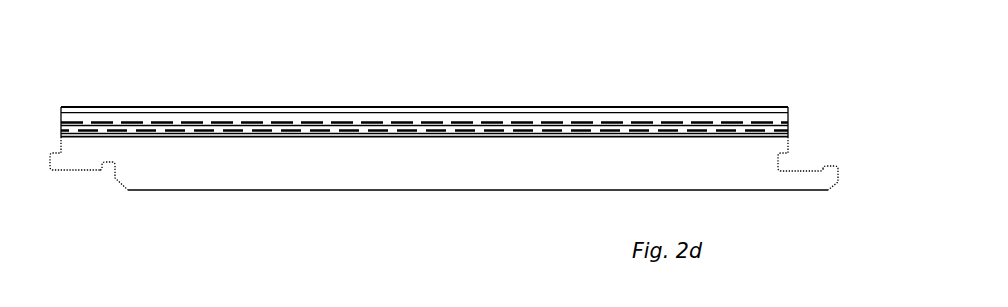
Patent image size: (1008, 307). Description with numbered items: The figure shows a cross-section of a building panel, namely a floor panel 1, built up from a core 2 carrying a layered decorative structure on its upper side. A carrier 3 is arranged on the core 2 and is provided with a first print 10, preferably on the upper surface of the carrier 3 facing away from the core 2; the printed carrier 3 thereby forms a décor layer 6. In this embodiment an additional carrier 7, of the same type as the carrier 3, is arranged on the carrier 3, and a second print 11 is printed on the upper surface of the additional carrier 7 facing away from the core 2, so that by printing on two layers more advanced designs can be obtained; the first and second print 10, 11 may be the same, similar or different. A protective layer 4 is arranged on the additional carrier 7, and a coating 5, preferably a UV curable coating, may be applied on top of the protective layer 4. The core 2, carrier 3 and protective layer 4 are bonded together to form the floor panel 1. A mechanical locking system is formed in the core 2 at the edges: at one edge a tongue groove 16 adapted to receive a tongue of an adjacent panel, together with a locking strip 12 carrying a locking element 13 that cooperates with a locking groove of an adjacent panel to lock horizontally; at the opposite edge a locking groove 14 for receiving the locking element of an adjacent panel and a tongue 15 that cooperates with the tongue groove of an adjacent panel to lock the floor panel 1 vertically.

The floor panel 1 is at (598, 102).
The core 2 is at (305, 175).
The carrier 3 is at (130, 133).
The protective layer 4 is at (405, 118).
The coating 5 is at (470, 111).
The décor layer 6 is at (452, 116).
The additional carrier 7 is at (193, 125).
The first print 10 is at (263, 130).
The second print 11 is at (325, 125).
The locking strip 12 is at (794, 178).
The locking element 13 is at (833, 181).
The locking groove 14 is at (108, 167).
The tongue 15 is at (60, 162).
The tongue groove 16 is at (783, 163).